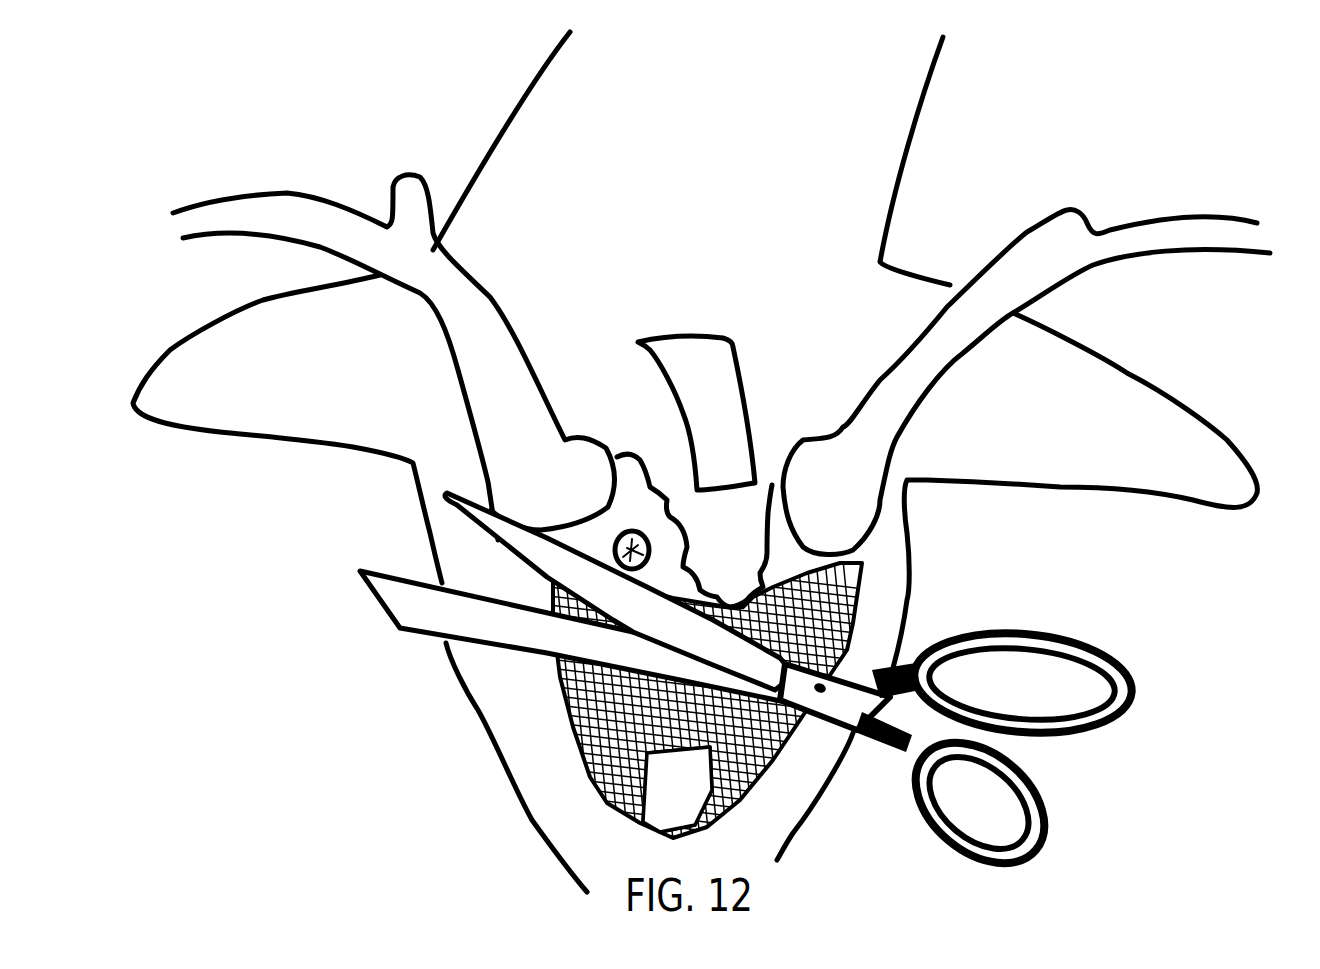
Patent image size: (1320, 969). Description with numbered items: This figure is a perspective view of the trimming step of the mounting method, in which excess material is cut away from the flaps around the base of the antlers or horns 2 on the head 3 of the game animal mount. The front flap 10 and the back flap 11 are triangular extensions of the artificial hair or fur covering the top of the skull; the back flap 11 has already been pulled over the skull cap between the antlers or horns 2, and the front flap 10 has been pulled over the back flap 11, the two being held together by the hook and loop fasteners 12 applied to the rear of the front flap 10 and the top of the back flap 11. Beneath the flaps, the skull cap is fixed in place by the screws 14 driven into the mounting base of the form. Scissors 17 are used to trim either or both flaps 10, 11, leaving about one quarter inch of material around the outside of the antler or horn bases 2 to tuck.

The antlers or horns 2 is at (293, 222).
The head 3 is at (920, 580).
The front flap 10 is at (572, 740).
The back flap 11 is at (717, 514).
The hook and loop fasteners 12 is at (707, 383).
The screws 14 is at (613, 548).
The scissors 17 is at (842, 693).